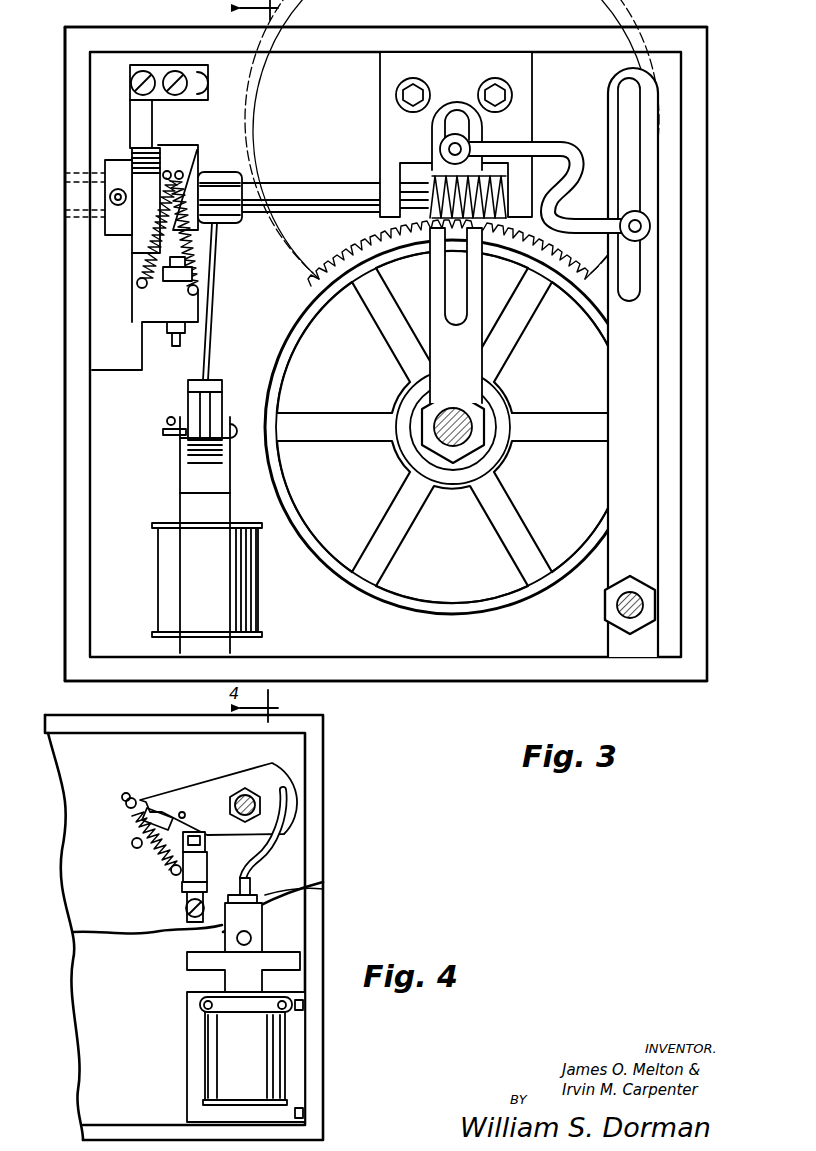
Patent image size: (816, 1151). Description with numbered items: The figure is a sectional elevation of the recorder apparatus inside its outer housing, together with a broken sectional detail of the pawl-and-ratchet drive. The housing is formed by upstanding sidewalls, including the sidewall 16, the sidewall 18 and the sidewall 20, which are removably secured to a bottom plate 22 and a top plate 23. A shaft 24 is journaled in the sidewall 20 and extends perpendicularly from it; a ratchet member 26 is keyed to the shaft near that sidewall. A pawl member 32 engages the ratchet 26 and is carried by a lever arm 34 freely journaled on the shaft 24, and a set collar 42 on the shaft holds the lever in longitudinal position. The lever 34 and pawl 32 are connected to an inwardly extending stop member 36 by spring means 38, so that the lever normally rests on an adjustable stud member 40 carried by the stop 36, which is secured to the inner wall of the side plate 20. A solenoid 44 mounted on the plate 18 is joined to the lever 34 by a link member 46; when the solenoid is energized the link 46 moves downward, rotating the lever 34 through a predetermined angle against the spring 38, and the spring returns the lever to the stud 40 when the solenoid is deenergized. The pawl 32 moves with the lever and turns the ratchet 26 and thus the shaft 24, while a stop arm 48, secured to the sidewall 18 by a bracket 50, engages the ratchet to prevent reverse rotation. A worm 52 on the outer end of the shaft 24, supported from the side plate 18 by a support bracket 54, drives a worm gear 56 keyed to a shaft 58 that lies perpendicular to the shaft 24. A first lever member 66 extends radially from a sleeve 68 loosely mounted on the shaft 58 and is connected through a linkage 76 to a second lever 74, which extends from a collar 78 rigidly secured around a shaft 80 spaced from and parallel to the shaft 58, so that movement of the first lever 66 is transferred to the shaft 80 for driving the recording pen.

In FIG. 3, the sidewall 16 is at (698, 262).
In FIG. 3, the sidewall 18 is at (322, 105).
In FIG. 3, the sidewall 20 is at (76, 291).
In FIG. 3, the bottom plate 22 is at (480, 668).
In FIG. 3, the top plate 23 is at (388, 35).
In FIG. 3, the shaft 24 is at (292, 189).
In FIG. 4, the shaft 24 is at (243, 788).
In FIG. 3, the ratchet member 26 is at (143, 148).
In FIG. 3, the pawl member 32 is at (105, 222).
In FIG. 3, the lever arm 34 is at (178, 153).
In FIG. 4, the lever arm 34 is at (202, 790).
In FIG. 3, the stop member 36 is at (108, 335).
In FIG. 4, the stop member 36 is at (193, 872).
In FIG. 3, the spring means 38 is at (200, 241).
In FIG. 4, the spring means 38 is at (165, 806).
In FIG. 3, the stud member 40 is at (203, 275).
In FIG. 4, the stud member 40 is at (207, 833).
In FIG. 3, the set collar 42 is at (218, 173).
In FIG. 4, the set collar 42 is at (233, 797).
In FIG. 3, the solenoid 44 is at (170, 562).
In FIG. 4, the solenoid 44 is at (230, 1058).
In FIG. 3, the link member 46 is at (205, 357).
In FIG. 4, the link member 46 is at (254, 858).
In FIG. 3, the stop arm 48 is at (138, 107).
In FIG. 3, the bracket 50 is at (197, 71).
In FIG. 3, the worm 52 is at (507, 177).
In FIG. 3, the support bracket 54 is at (475, 63).
In FIG. 3, the worm gear 56 is at (352, 249).
In FIG. 3, the shaft 58 is at (436, 415).
In FIG. 3, the first lever member 66 is at (472, 307).
In FIG. 3, the sleeve 68 is at (478, 413).
In FIG. 3, the second lever 74 is at (650, 147).
In FIG. 3, the linkage 76 is at (560, 148).
In FIG. 3, the collar 78 is at (646, 594).
In FIG. 3, the shaft 80 is at (617, 612).